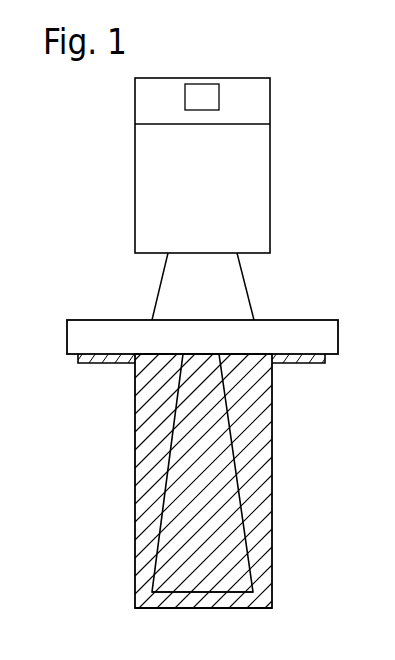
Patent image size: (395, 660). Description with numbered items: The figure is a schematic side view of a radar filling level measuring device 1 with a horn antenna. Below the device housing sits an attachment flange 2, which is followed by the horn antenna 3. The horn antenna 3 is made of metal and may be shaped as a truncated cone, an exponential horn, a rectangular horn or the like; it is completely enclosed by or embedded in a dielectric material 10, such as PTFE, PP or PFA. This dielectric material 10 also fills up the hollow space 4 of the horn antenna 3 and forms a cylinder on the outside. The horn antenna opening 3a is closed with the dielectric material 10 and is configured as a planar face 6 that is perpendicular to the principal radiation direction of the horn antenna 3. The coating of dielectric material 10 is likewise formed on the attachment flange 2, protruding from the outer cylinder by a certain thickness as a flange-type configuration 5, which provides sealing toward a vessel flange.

The filling level measuring device 1 is at (225, 193).
The attachment flange 2 is at (305, 331).
The horn antenna 3 is at (247, 523).
The horn antenna opening 3a is at (235, 602).
The hollow space 4 is at (190, 438).
The flange-type configuration 5 is at (280, 365).
The planar face 6 is at (190, 608).
The dielectric material 10 is at (245, 428).